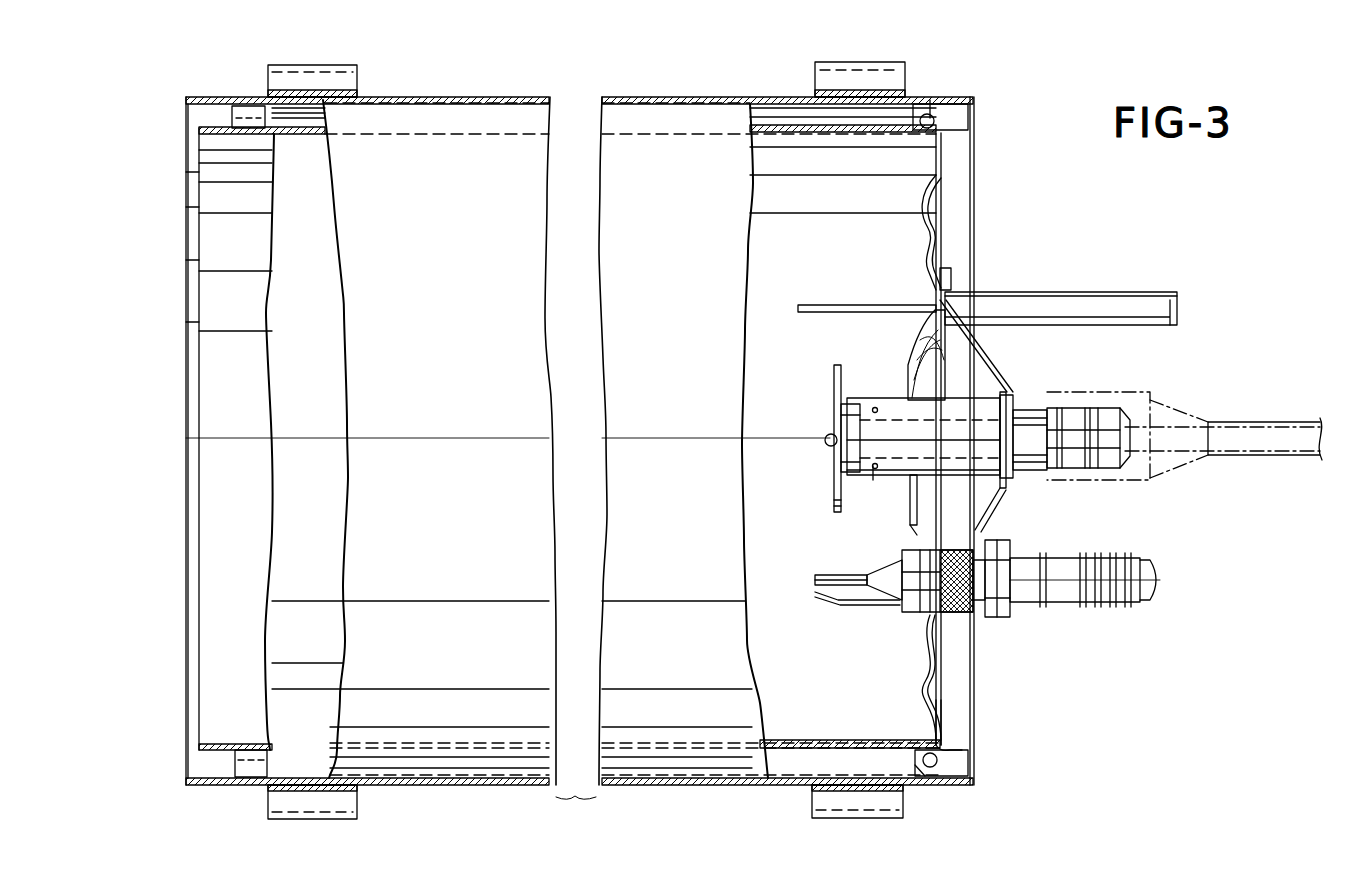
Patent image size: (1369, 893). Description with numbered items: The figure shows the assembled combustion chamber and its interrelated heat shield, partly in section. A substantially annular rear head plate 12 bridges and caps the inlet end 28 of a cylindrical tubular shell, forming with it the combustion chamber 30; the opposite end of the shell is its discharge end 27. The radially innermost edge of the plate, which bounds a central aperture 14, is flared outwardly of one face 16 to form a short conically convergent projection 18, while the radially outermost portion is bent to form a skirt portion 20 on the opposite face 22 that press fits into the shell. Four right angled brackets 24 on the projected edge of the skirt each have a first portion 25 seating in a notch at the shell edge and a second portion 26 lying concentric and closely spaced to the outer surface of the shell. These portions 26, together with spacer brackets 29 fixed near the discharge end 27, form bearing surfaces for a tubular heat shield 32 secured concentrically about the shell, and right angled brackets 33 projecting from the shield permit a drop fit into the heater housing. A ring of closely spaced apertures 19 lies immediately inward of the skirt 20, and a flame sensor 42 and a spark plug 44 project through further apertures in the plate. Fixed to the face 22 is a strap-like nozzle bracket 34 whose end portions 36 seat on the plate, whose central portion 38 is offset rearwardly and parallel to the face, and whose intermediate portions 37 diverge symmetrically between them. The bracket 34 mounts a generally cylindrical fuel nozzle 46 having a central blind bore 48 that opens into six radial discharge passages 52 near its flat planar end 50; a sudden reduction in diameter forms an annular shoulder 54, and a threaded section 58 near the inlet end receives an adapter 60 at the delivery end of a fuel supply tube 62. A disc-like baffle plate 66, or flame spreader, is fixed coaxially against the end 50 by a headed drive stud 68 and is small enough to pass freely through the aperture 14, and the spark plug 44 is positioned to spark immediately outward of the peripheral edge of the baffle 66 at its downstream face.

The rear head plate 12 is at (928, 627).
The central aperture 14 is at (912, 494).
The face 16 is at (932, 690).
The conically convergent projection 18 is at (912, 342).
The apertures 19 is at (941, 712).
The skirt portion 20 is at (960, 742).
The opposite face 22 is at (936, 210).
The right angled brackets 24 is at (975, 758).
The first portion 25 is at (970, 115).
The second portion 26 is at (931, 100).
The discharge end 27 is at (186, 750).
The inlet end 28 is at (974, 782).
The spacer bracket 29 is at (246, 106).
The combustion chamber 30 is at (773, 478).
The tubular heat shield 32 is at (728, 788).
The right angled brackets 33 is at (357, 805).
The nozzle bracket 34 is at (982, 327).
The end portions 36 is at (946, 276).
The portions 37 is at (990, 366).
The central portion 38 is at (1006, 484).
The flame sensor 42 is at (804, 312).
The spark plug 44 is at (822, 600).
The fuel nozzle 46 is at (957, 402).
The blind bore 48 is at (904, 406).
The end 50 is at (858, 400).
The discharge passages 52 is at (873, 482).
The annular shoulder 54 is at (1006, 400).
The threaded section 58 is at (1075, 414).
The adapter 60 is at (1166, 392).
The fuel supply tube 62 is at (1262, 420).
The baffle plate 66 is at (834, 380).
The headed drive stud 68 is at (826, 436).